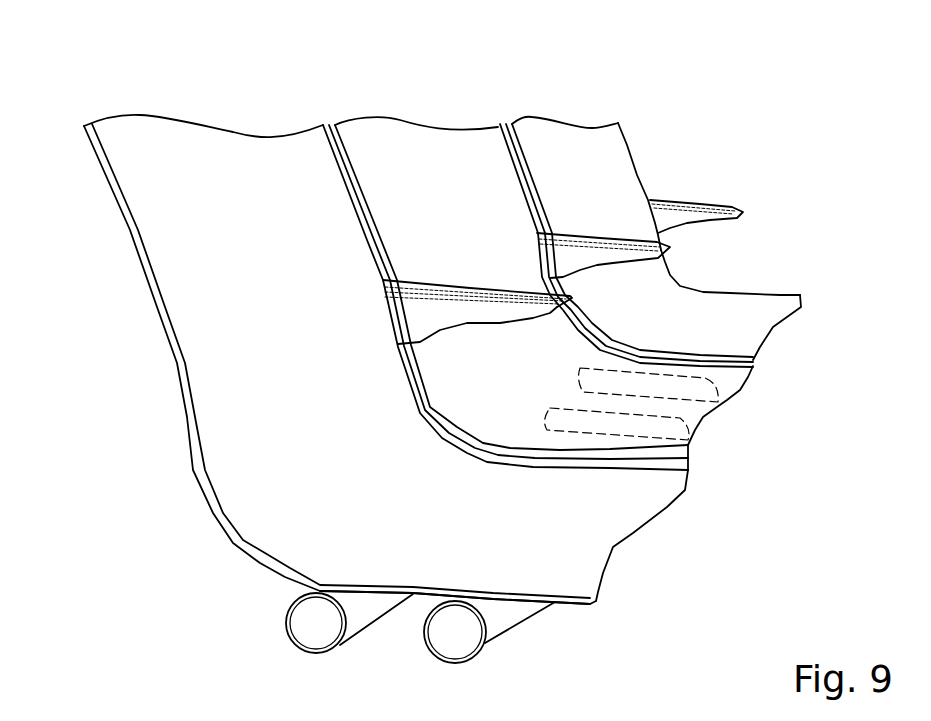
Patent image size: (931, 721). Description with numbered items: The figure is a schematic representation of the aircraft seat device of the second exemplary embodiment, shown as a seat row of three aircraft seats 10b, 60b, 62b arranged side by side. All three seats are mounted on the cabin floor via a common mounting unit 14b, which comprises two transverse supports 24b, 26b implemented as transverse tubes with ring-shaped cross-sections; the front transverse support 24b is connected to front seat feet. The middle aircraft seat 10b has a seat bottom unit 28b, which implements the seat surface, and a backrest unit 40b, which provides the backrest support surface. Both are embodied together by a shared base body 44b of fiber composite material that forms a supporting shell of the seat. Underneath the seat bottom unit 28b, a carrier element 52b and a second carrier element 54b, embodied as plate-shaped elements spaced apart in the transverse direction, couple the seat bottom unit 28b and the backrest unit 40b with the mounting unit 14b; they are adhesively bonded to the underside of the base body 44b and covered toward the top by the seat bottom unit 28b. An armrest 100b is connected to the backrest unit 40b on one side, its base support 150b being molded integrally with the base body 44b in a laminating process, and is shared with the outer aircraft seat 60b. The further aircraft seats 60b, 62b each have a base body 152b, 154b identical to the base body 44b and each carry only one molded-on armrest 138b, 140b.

The aircraft seat 10b is at (408, 120).
The mounting unit 14b is at (378, 654).
The front transverse support 24b is at (455, 634).
The transverse support 26b is at (310, 623).
The seat bottom unit 28b is at (720, 418).
The backrest unit 40b is at (387, 201).
The base body 44b is at (457, 185).
The carrier element 52b is at (673, 422).
The second carrier element 54b is at (717, 380).
The aircraft seat 60b is at (592, 114).
The aircraft seat 62b is at (233, 129).
The armrest 100b is at (580, 233).
The armrest 138b is at (702, 215).
The armrest 140b is at (417, 315).
The base support 150b is at (613, 257).
The base body 152b is at (607, 158).
The base body 154b is at (220, 287).